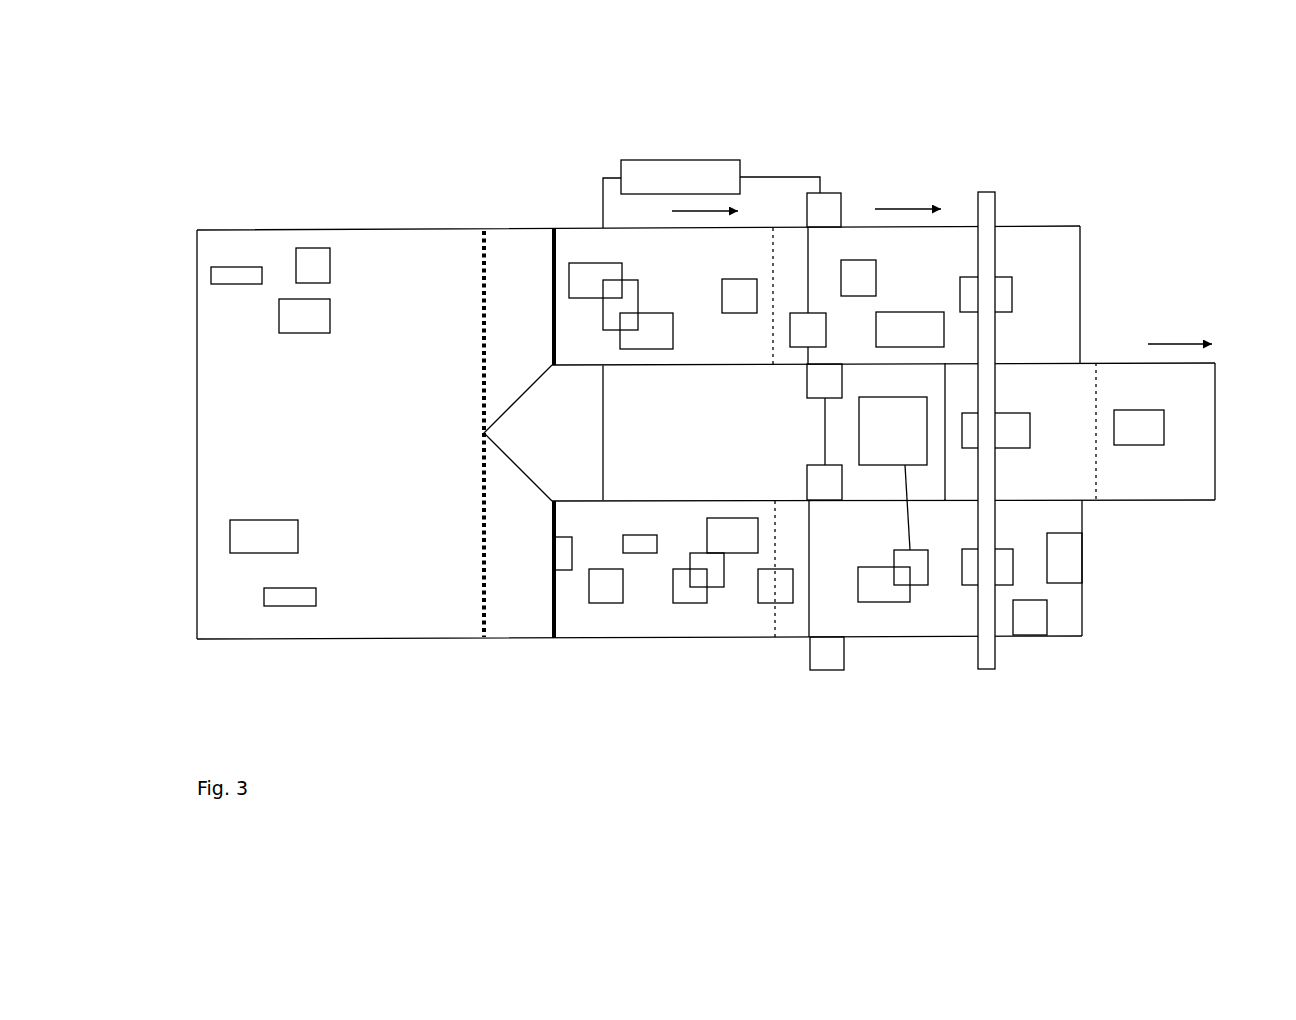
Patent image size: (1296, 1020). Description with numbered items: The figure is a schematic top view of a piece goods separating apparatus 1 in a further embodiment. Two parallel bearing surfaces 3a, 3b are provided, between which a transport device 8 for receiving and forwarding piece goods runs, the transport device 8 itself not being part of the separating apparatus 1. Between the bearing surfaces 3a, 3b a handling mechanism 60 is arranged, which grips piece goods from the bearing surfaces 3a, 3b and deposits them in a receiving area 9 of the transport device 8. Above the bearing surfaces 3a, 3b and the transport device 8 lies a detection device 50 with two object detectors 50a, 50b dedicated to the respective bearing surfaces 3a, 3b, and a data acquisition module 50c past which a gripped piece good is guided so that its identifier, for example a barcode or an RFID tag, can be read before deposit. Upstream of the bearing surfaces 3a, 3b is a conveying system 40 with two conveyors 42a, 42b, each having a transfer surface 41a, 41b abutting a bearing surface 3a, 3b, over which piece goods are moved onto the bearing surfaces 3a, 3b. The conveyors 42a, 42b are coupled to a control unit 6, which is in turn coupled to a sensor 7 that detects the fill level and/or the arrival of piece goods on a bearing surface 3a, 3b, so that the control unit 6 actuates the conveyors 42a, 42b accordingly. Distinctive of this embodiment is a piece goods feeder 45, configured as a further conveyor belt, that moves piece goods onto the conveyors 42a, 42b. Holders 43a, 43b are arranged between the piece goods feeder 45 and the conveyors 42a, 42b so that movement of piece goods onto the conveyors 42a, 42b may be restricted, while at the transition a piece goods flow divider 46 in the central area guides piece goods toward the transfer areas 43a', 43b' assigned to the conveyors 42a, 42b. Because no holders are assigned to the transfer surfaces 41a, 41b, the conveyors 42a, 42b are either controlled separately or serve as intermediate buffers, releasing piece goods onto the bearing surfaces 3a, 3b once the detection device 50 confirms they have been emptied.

The separating apparatus 1 is at (1130, 136).
The bearing surface 3a is at (1062, 243).
The bearing surface 3b is at (1065, 618).
The control unit 6 is at (688, 176).
The sensor 7 is at (825, 208).
The transport device 8 is at (1199, 480).
The receiving area 9 is at (1077, 463).
The conveying system 40 is at (590, 692).
The transfer surface 41a is at (790, 243).
The transfer surface 41b is at (793, 620).
The conveyor 42a is at (735, 245).
The conveyor 42b is at (573, 623).
The holder 43a is at (572, 227).
The transfer area 43a' is at (389, 261).
The holder 43b is at (616, 633).
The transfer area 43b' is at (408, 600).
The piece goods feeder 45 is at (452, 263).
The piece goods flow divider 46 is at (484, 403).
The detection device 50 is at (996, 687).
The object detector 50a is at (969, 292).
The object detector 50b is at (968, 567).
The data acquisition module 50c is at (1012, 428).
The handling mechanism 60 is at (875, 431).